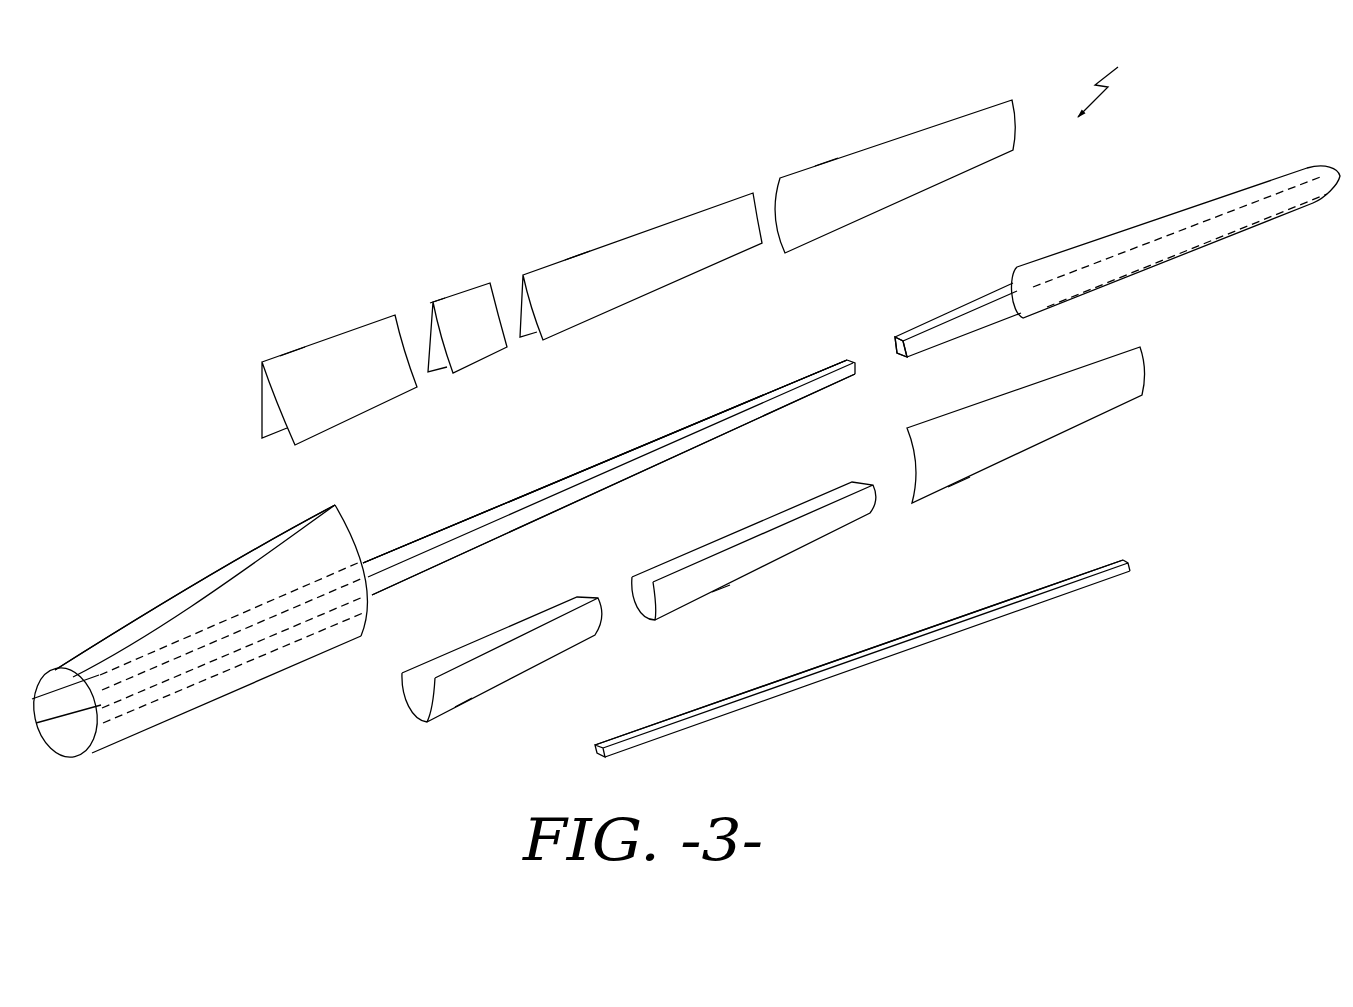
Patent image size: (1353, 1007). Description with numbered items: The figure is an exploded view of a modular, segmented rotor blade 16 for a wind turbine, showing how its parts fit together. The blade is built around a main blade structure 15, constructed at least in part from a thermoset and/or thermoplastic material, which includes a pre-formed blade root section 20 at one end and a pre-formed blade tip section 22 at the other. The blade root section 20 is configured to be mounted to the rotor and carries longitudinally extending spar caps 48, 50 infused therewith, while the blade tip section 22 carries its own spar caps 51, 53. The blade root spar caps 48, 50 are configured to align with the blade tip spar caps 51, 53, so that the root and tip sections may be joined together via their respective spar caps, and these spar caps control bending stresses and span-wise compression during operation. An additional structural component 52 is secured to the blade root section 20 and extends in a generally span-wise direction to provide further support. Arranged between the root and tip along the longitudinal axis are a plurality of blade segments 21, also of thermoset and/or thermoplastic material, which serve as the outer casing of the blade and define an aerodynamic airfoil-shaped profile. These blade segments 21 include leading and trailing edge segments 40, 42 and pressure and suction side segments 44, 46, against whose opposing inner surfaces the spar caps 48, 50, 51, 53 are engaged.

The main blade structure 15 is at (192, 568).
The rotor blade 16 is at (1118, 74).
The blade root section 20 is at (188, 711).
The blade segment 21 is at (293, 345).
The blade tip section 22 is at (1187, 253).
The leading edge segment 40 is at (514, 684).
The trailing edge segment 42 is at (337, 328).
The pressure side segment 44 is at (892, 140).
The suction side segment 46 is at (1032, 449).
The spar cap 48 is at (415, 541).
The spar cap 50 is at (597, 484).
The spar cap 51 is at (895, 334).
The structural component 52 is at (966, 630).
The spar cap 53 is at (948, 341).